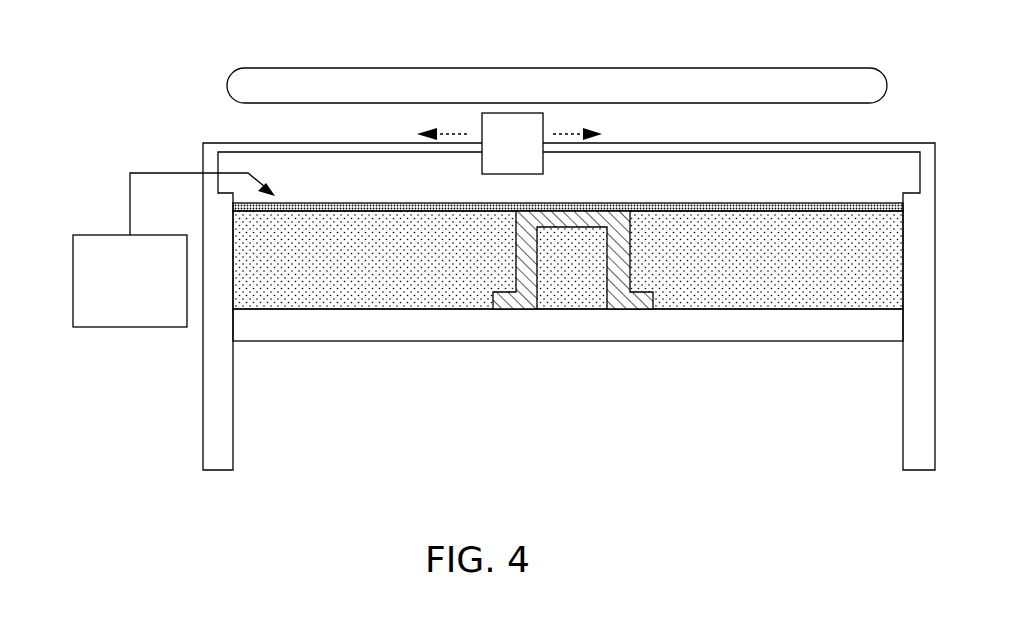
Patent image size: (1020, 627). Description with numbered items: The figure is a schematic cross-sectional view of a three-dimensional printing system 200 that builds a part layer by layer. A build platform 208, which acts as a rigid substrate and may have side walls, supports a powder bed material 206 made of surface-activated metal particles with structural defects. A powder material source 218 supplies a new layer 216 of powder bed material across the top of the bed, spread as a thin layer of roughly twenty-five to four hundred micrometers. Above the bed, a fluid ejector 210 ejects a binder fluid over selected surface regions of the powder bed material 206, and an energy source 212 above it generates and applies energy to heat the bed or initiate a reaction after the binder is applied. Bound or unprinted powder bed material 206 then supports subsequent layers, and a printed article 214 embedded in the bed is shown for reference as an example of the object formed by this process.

The three-dimensional printing system 200 is at (178, 68).
The powder bed material 206 is at (408, 293).
The build platform 208 is at (688, 323).
The fluid ejector 210 is at (493, 152).
The energy source 212 is at (537, 97).
The printed article 214 is at (617, 220).
The new layer 216 is at (462, 206).
The powder material source 218 is at (111, 292).